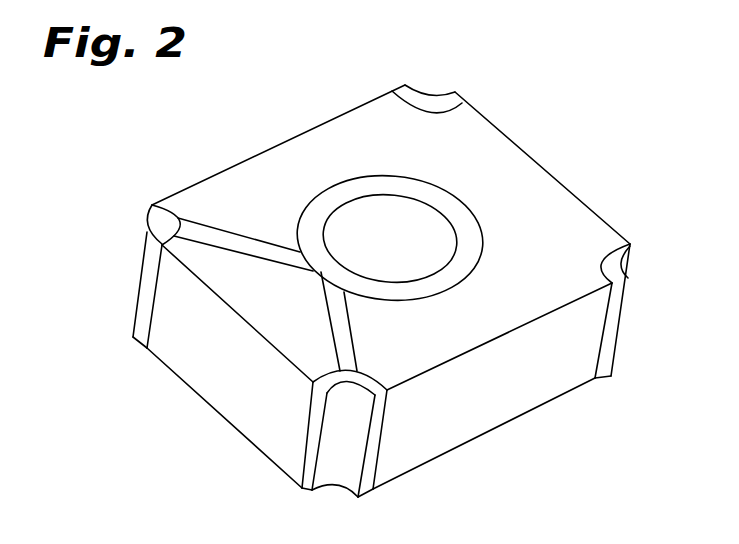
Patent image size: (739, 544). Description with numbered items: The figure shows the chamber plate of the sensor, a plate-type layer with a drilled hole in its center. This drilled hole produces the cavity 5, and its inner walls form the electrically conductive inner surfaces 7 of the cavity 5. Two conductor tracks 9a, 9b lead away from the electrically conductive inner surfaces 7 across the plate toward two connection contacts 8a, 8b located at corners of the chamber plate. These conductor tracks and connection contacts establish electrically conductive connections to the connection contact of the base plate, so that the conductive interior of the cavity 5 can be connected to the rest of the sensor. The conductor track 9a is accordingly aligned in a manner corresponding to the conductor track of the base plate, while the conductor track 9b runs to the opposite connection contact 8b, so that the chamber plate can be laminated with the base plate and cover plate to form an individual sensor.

The cavity 5 is at (378, 238).
The inner surfaces of the cavity 7 is at (435, 233).
The connection contact of the chamber plate 8a is at (353, 430).
The connection contact of the chamber plate 8b is at (151, 224).
The conductor track of the chamber plate 9a is at (345, 335).
The conductor track of the chamber plate 9b is at (232, 236).